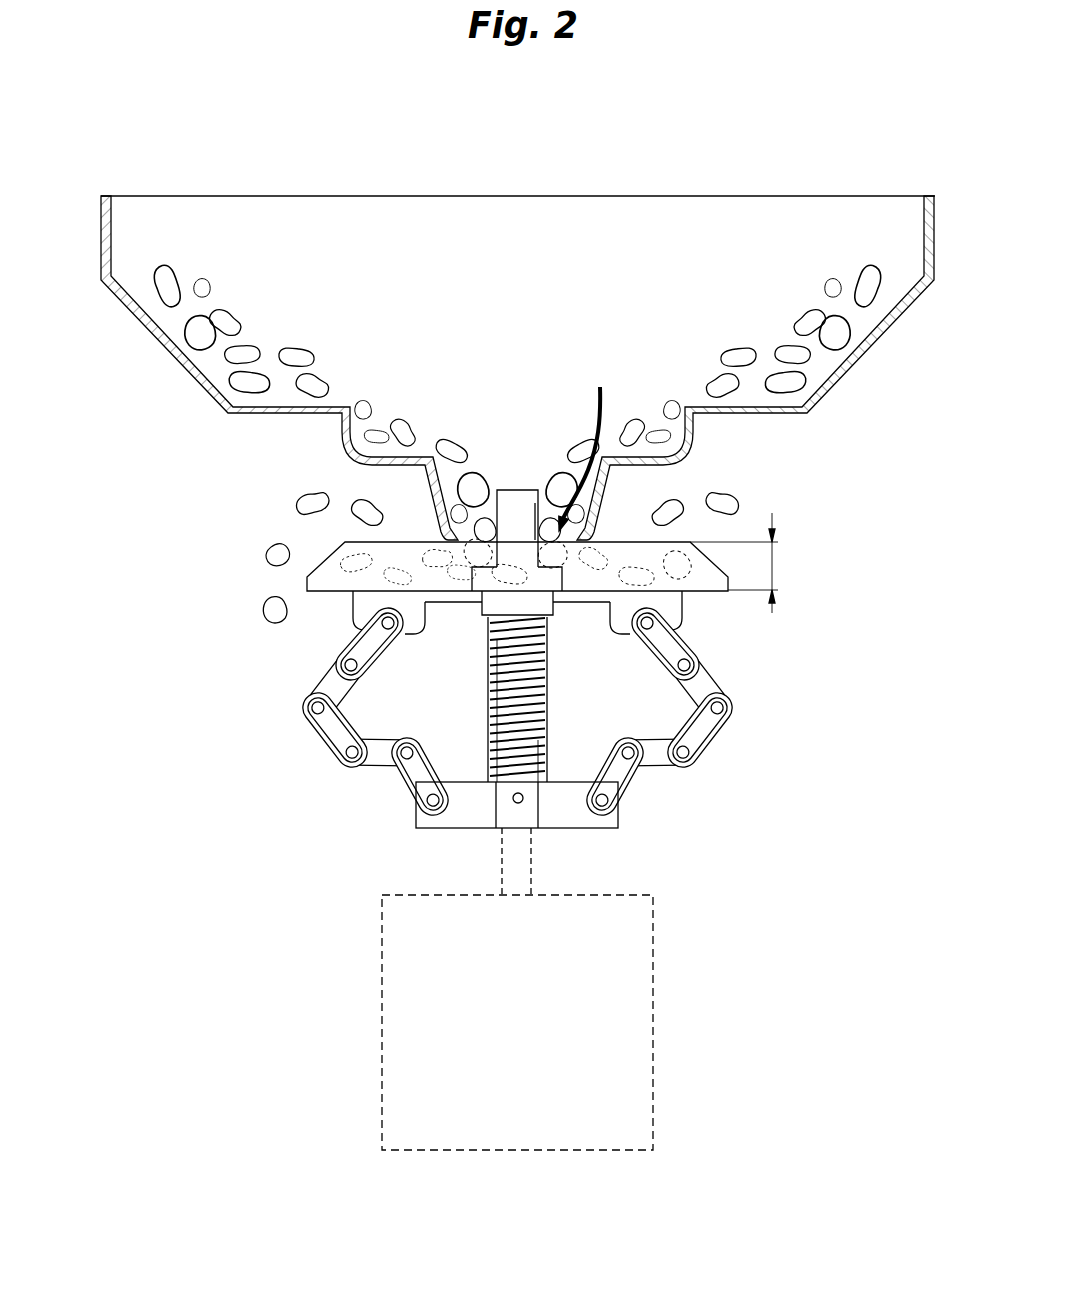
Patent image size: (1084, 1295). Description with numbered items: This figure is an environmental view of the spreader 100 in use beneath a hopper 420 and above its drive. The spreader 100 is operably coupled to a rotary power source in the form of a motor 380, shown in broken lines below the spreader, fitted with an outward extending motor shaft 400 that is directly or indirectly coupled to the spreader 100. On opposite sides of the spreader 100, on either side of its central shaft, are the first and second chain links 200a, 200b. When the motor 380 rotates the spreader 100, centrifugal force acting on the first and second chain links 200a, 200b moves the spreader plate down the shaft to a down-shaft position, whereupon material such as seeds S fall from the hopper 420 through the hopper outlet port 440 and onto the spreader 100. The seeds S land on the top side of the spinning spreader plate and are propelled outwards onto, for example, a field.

The spreader 100 is at (510, 728).
The first chain link 200a is at (732, 717).
The second chain link 200b is at (318, 737).
The motor 380 is at (653, 1052).
The motor shaft 400 is at (531, 864).
The hopper 420 is at (842, 375).
The hopper outlet port 440 is at (585, 446).
The seeds S is at (278, 552).